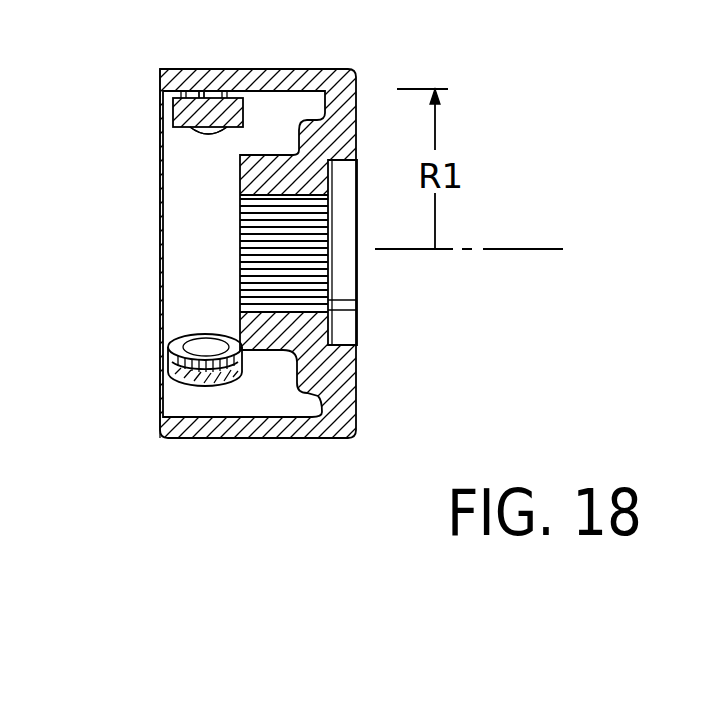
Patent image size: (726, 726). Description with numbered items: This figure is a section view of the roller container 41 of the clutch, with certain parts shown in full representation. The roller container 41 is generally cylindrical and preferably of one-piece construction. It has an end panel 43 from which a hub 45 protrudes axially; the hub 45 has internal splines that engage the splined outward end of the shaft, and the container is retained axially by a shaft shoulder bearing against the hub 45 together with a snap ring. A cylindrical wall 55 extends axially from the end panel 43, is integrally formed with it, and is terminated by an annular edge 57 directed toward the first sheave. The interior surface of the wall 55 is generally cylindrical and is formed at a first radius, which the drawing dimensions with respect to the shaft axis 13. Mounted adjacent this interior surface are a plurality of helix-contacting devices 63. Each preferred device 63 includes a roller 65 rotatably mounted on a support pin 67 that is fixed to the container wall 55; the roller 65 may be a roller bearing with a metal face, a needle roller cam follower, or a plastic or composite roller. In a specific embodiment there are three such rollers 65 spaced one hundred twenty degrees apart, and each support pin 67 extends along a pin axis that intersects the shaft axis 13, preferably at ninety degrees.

The axis 13 is at (507, 248).
The roller container 41 is at (125, 319).
The end panel 43 is at (353, 387).
The hub 45 is at (266, 340).
The cylindrical wall 55 is at (280, 70).
The annular edge 57 is at (160, 82).
The helix-contacting device 63 is at (140, 129).
The roller 65 is at (200, 135).
The support pin 67 is at (208, 70).